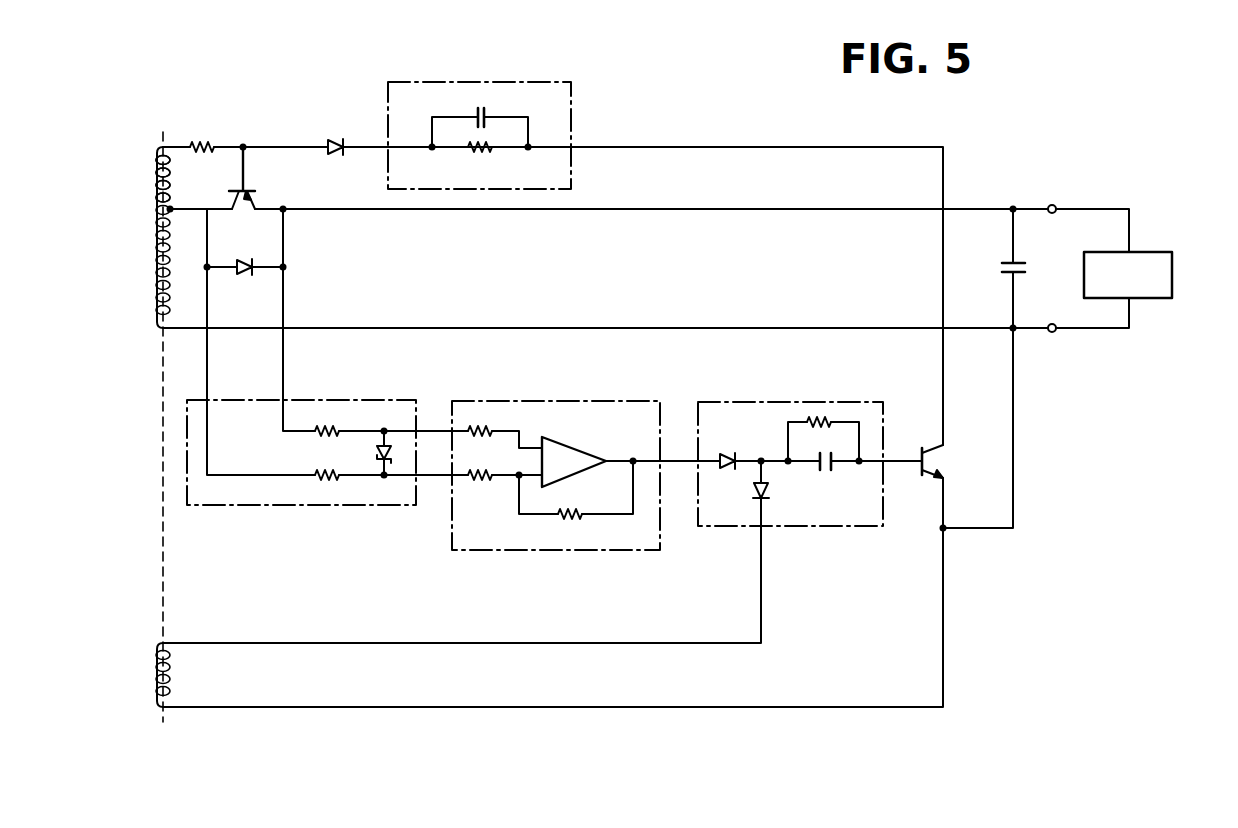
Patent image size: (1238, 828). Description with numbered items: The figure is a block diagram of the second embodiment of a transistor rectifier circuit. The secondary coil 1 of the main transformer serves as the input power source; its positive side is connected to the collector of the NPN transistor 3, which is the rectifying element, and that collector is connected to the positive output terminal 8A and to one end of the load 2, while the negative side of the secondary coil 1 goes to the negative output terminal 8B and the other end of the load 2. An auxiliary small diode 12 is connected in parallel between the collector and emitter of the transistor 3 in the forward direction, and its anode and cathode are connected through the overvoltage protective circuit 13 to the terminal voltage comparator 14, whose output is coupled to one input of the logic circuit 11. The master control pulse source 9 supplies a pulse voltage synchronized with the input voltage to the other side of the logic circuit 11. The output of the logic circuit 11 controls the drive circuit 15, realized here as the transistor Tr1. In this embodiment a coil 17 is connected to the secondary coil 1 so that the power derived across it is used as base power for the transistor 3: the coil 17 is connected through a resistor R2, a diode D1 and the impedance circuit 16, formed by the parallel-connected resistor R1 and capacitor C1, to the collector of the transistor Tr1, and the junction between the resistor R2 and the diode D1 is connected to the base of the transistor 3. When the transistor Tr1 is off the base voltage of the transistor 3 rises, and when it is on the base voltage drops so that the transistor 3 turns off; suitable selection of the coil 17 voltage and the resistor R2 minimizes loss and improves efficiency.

The secondary coil 1 is at (156, 262).
The coil 17 is at (156, 181).
The load 2 is at (1172, 272).
The NPN transistor 3 is at (243, 212).
The auxiliary diode 12 is at (243, 275).
The impedance circuit 16 is at (505, 121).
The resistor R1 is at (466, 153).
The resistor R2 is at (204, 145).
The capacitor C1 is at (477, 112).
The diode D1 is at (334, 145).
The positive output terminal 8A is at (1052, 205).
The negative output terminal 8B is at (1052, 332).
The overvoltage protective circuit 13 is at (187, 452).
The terminal voltage comparator 14 is at (550, 550).
The logic circuit 11 is at (845, 526).
The drive circuit 15 is at (959, 471).
The transistor Tr1 is at (934, 458).
The master control pulse source 9 is at (156, 677).